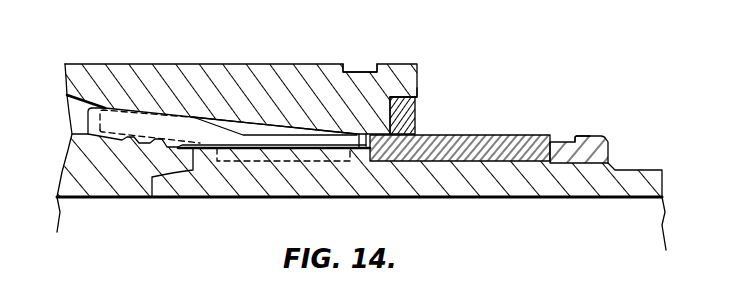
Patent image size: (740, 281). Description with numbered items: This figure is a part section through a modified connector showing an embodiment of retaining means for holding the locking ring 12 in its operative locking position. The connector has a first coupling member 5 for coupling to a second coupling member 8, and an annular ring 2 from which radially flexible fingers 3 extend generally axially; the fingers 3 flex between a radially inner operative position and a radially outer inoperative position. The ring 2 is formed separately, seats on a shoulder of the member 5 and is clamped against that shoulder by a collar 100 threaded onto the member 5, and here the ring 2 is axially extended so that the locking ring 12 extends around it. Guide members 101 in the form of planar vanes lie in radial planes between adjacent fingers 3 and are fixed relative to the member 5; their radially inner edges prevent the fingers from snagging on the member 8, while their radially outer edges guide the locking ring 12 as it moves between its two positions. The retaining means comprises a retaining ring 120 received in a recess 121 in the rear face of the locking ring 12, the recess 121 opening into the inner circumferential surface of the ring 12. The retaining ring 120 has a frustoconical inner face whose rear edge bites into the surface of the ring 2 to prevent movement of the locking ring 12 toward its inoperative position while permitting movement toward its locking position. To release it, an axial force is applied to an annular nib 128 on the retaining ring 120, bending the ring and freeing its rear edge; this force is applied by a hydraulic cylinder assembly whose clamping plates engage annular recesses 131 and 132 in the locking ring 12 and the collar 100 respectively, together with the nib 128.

The annular ring 2 is at (480, 140).
The radially flexible fingers 3 is at (152, 125).
The first coupling member 5 is at (507, 170).
The second coupling member 8 is at (75, 162).
The locking ring 12 is at (260, 77).
The collar 100 is at (603, 150).
The guide members 101 is at (227, 125).
The retaining ring 120 is at (418, 110).
The recess 121 is at (395, 98).
The annular nib 128 is at (420, 97).
The annular recess 131 is at (345, 66).
The annular recess 132 is at (577, 138).